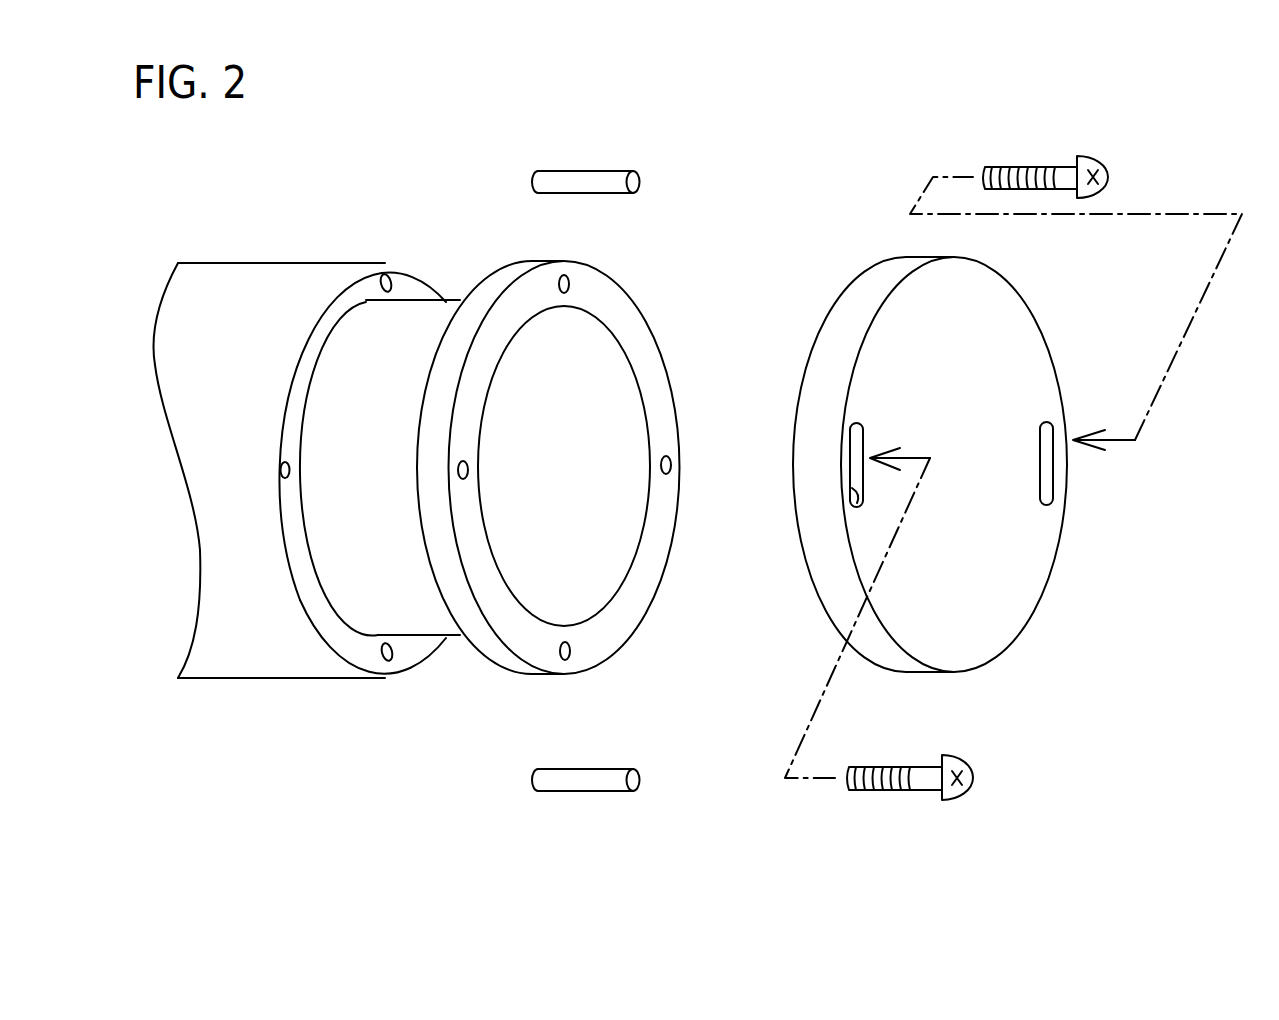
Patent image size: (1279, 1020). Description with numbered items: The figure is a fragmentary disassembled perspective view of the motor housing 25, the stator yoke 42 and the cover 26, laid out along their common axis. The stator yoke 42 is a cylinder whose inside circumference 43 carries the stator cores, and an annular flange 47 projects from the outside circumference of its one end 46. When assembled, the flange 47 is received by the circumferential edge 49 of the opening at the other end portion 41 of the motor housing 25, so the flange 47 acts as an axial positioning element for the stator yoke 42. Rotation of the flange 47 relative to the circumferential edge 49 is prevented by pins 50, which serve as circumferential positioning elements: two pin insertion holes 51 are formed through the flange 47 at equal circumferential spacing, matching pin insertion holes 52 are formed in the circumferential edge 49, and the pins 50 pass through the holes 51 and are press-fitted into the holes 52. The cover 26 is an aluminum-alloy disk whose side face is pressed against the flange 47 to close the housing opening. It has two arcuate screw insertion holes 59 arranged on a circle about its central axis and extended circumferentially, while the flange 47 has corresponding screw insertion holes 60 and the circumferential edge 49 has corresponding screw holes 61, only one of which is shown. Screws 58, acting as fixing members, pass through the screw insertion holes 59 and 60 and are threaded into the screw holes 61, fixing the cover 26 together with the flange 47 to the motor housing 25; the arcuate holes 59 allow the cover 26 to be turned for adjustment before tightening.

The motor housing 25 is at (208, 263).
The cover 26 is at (870, 272).
The other end portion 41 is at (361, 454).
The stator yoke 42 is at (428, 317).
The inside circumference 43 is at (600, 392).
The one end 46 is at (433, 640).
The annular flange 47 is at (507, 660).
The circumferential edge 49 is at (329, 627).
The pin 50 is at (598, 173).
The pin insertion hole 51 is at (572, 284).
The pin insertion hole 52 is at (392, 292).
The screw 58 is at (1070, 167).
The screw insertion hole 59 is at (857, 503).
The screw insertion hole 60 is at (472, 471).
The screw hole 61 is at (283, 470).